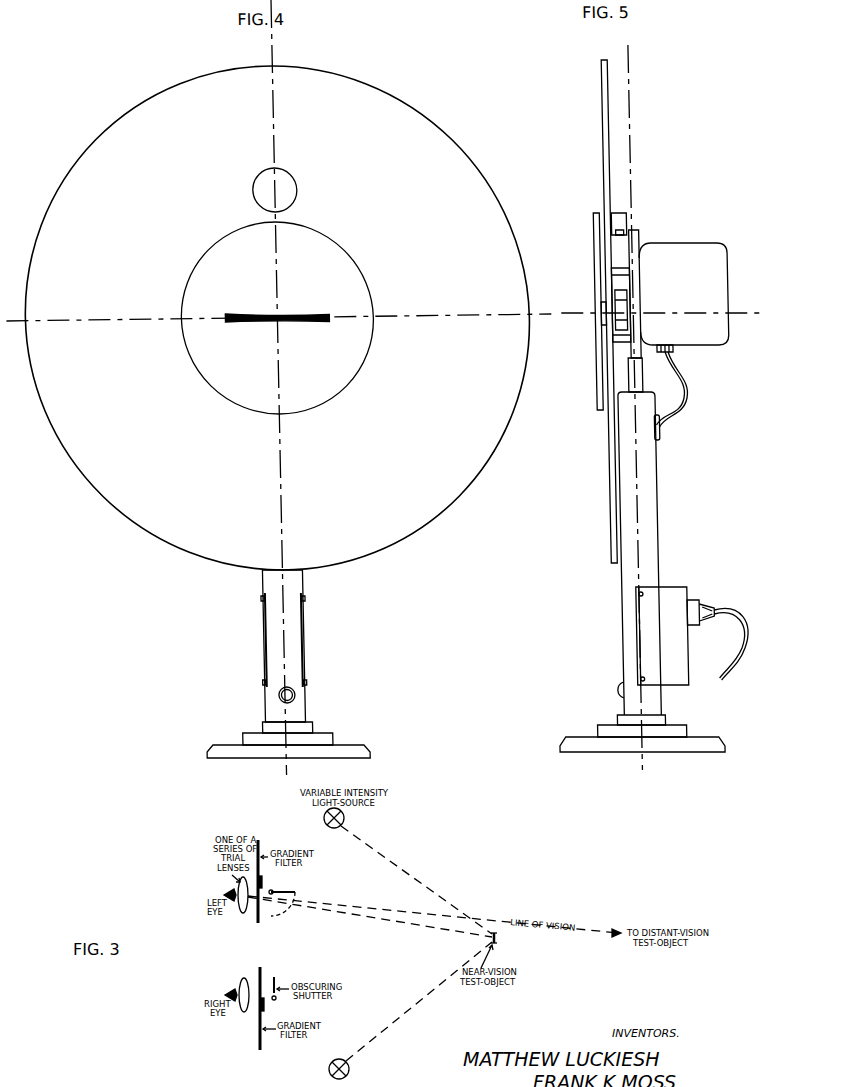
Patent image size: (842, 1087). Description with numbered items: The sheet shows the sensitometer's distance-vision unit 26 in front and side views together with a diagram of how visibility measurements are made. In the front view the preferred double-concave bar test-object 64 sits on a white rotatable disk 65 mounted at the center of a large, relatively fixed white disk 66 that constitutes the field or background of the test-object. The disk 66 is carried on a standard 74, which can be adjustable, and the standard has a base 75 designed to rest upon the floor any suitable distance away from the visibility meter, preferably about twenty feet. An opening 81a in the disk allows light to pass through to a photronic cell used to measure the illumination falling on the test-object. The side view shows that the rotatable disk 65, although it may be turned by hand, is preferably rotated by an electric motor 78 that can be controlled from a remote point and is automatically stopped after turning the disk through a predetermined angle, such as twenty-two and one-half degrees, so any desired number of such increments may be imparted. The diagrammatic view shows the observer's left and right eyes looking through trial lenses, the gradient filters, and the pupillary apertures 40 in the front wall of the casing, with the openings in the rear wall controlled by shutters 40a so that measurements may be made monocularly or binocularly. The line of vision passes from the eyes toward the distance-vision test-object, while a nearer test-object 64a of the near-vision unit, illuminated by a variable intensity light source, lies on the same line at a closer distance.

In FIG. 4, the distance-vision unit 26 is at (280, 387).
In FIG. 5, the distance-vision unit 26 is at (666, 407).
In FIG. 4, the large relatively fixed disk 66 is at (451, 490).
In FIG. 5, the large relatively fixed disk 66 is at (600, 95).
In FIG. 4, the rotatable disk 65 is at (368, 296).
In FIG. 5, the rotatable disk 65 is at (591, 255).
In FIG. 4, the opening 81a is at (256, 173).
In FIG. 4, the double-concave bar test-object 64 is at (307, 313).
In FIG. 5, the electric motor 78 is at (670, 253).
In FIG. 5, the standard 74 is at (647, 530).
In FIG. 5, the base 75 is at (672, 752).
In FIG. 3, the pupillary apertures 40 is at (285, 891).
In FIG. 3, the shutters 40a is at (276, 978).
In FIG. 3, the test-object of the near-vision unit 64a is at (497, 940).